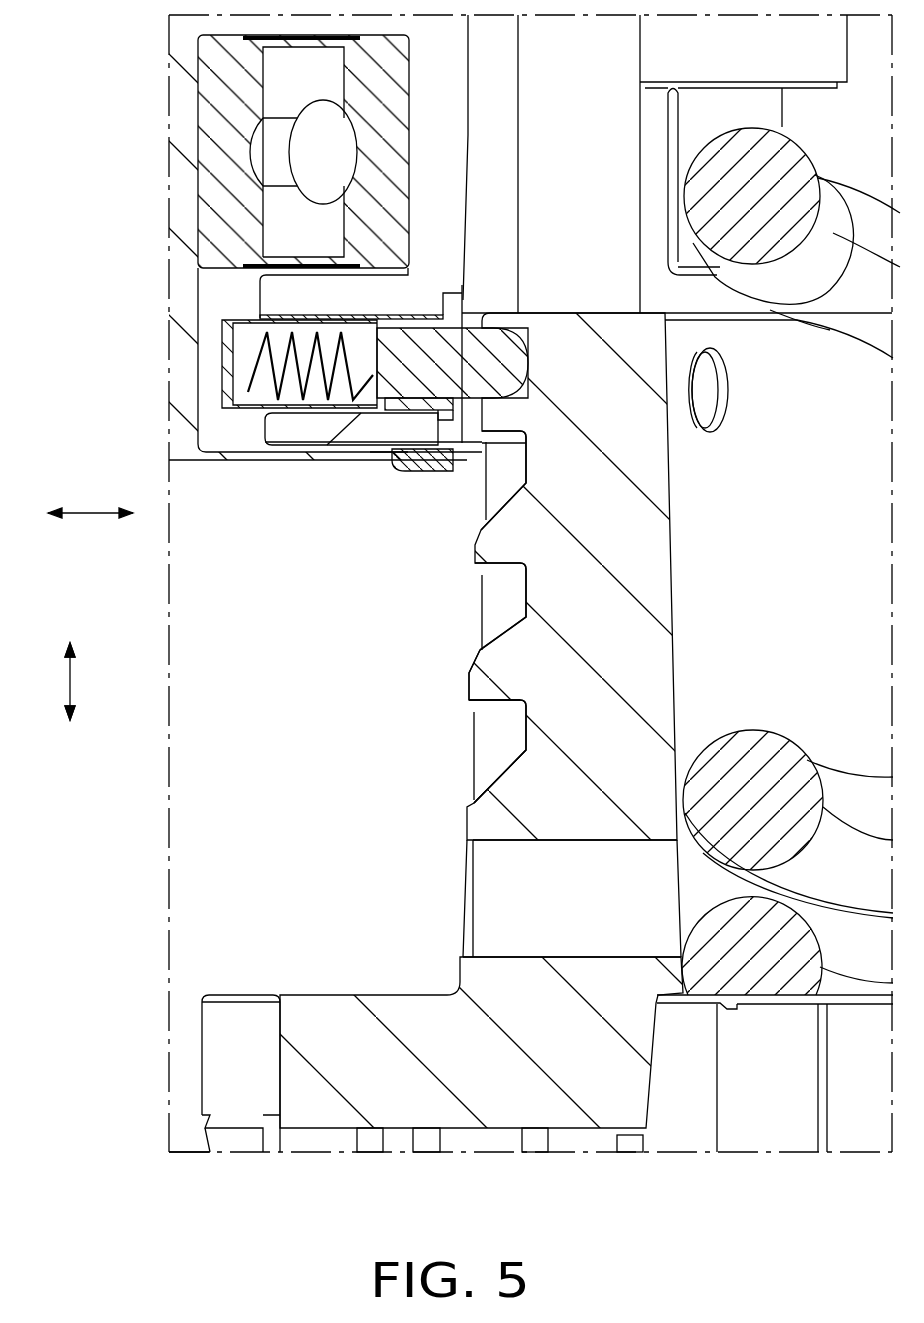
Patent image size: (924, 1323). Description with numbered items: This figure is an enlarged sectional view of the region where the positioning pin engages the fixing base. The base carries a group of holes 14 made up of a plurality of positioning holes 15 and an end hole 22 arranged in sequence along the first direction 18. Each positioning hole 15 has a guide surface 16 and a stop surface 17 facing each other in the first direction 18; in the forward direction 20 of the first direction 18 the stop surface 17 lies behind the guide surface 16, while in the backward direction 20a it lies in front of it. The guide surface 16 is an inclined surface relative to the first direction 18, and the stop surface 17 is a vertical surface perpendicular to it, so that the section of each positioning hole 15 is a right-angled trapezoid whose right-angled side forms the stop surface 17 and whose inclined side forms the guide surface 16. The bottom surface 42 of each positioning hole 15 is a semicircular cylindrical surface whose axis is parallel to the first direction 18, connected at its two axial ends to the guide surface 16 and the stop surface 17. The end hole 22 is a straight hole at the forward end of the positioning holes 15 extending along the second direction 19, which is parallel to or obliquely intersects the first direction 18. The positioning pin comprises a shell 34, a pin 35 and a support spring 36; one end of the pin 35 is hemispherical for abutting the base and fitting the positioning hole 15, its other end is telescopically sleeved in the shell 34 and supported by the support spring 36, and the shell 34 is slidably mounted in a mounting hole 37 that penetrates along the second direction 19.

The group of holes 14 is at (463, 572).
The positioning hole 15 is at (480, 483).
The guide surface 16 is at (490, 783).
The stop surface 17 is at (523, 712).
The first direction 18 is at (66, 683).
The second direction 19 is at (88, 512).
The forward direction 20 is at (63, 731).
The backward direction 20a is at (72, 635).
The end hole 22 is at (517, 925).
The shell 34 is at (228, 342).
The pin 35 is at (380, 305).
The support spring 36 is at (240, 376).
The mounting hole 37 is at (420, 342).
The bottom surface 42 is at (468, 677).